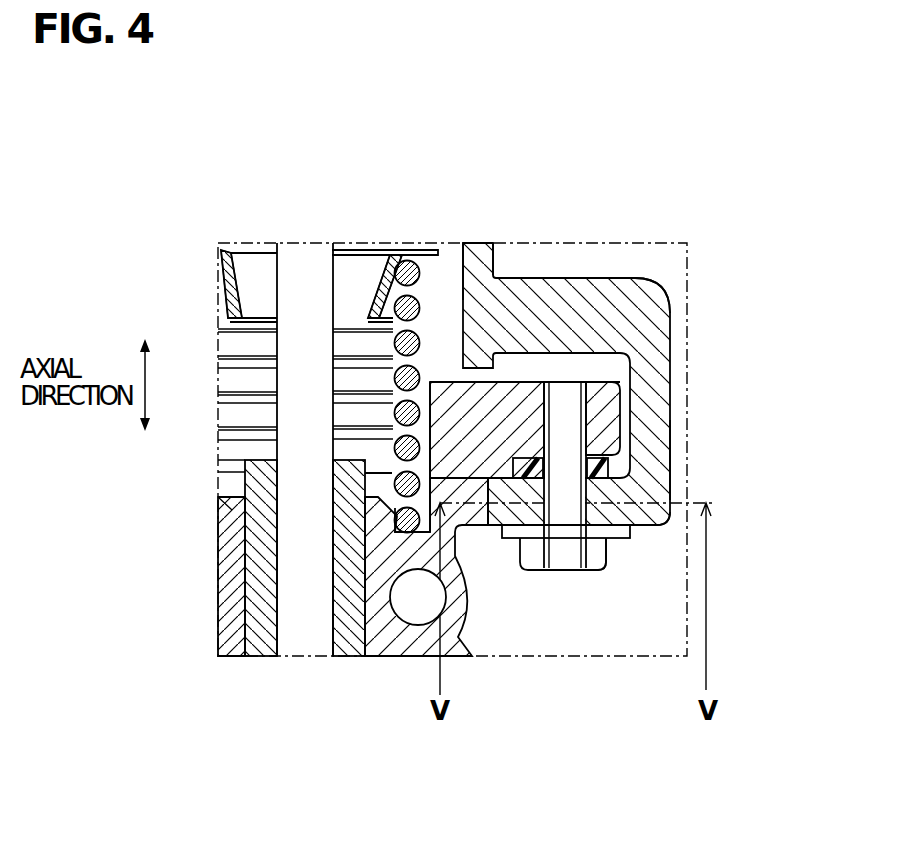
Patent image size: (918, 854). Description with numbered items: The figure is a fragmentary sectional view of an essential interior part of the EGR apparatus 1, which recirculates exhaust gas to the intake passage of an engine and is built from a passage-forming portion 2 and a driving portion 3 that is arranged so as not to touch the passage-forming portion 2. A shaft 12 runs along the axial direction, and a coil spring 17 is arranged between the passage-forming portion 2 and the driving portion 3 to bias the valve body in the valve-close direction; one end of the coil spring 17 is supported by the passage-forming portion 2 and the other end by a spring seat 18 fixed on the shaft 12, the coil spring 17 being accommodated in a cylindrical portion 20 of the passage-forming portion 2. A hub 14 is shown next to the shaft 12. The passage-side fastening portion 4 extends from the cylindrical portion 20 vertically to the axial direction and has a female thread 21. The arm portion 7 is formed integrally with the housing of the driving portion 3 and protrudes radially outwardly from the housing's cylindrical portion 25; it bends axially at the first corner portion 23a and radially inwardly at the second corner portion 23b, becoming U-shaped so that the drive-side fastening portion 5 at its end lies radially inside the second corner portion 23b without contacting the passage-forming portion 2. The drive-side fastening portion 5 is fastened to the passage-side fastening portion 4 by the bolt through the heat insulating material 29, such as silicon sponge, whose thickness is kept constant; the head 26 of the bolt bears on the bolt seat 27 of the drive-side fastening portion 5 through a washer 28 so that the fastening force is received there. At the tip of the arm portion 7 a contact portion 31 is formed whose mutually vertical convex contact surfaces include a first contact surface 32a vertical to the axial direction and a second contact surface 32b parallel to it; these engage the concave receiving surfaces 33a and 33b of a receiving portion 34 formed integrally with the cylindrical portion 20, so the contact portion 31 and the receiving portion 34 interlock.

The EGR apparatus 1 is at (200, 173).
The passage-forming portion 2 is at (381, 672).
The driving portion 3 is at (485, 237).
The passage-side fastening portion 4 is at (614, 402).
The drive-side fastening portion 5 is at (612, 537).
The arm portion 7 is at (686, 452).
The shaft 12 is at (287, 565).
The hub 14 is at (260, 602).
The coil spring 17 is at (417, 247).
The spring seat 18 is at (358, 247).
The cylindrical portion 20 is at (392, 482).
The female thread 21 is at (577, 375).
The first corner portion 23a is at (650, 302).
The second corner portion 23b is at (671, 526).
The cylindrical portion 25 is at (488, 268).
The head 26 is at (562, 557).
The bolt seat 27 is at (613, 542).
The washer 28 is at (600, 545).
The heat insulating material 29 is at (603, 468).
The contact portion 31 is at (547, 353).
The first contact surface 32a is at (620, 280).
The second contact surface 32b is at (456, 262).
The receiving surface 33a is at (535, 385).
The receiving surface 33b is at (510, 480).
The receiving portion 34 is at (490, 520).